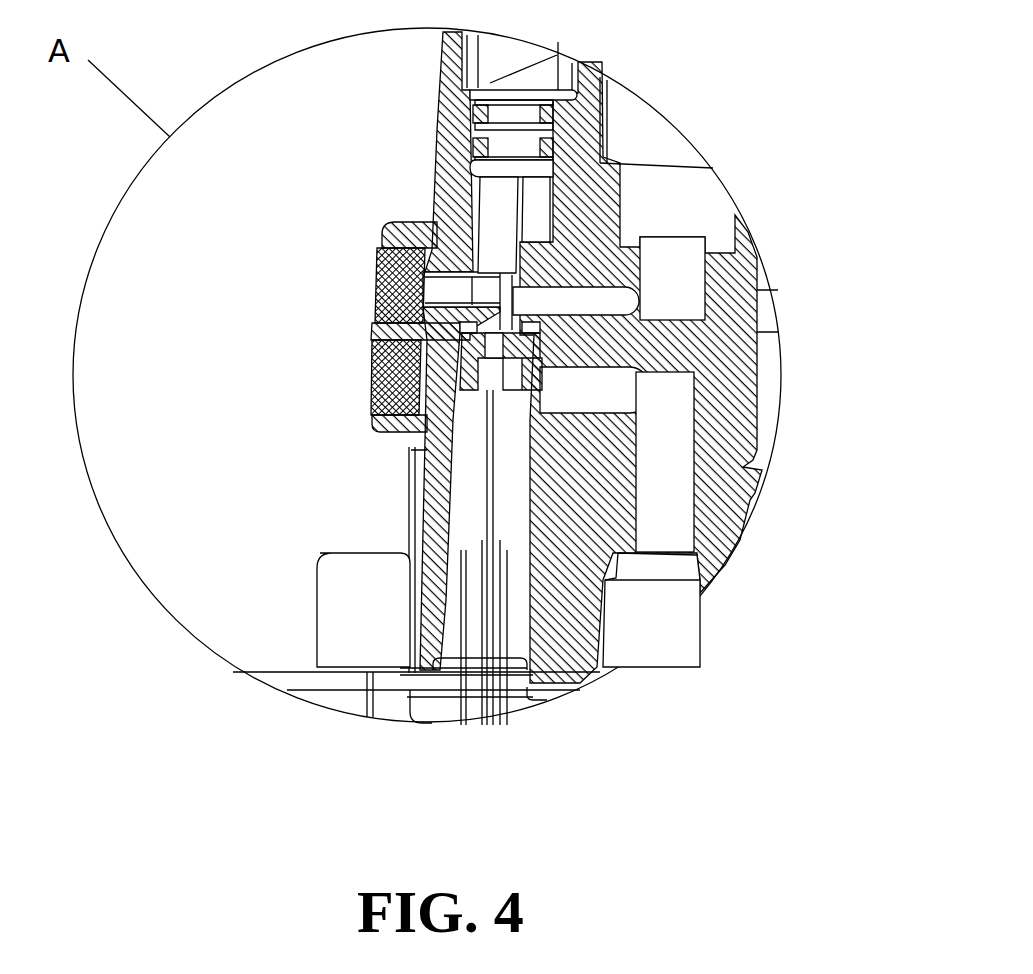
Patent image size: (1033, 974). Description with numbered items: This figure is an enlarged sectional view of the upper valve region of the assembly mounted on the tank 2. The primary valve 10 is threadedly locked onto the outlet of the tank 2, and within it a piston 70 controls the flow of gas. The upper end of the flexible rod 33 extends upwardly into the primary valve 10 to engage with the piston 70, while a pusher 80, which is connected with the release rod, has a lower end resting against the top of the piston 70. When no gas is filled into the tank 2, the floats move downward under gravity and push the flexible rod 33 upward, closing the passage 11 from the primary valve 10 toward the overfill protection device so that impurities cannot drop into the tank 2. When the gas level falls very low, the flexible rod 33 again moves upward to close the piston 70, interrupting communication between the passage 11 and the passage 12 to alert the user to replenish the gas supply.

The tank 2 is at (293, 675).
The primary valve 10 is at (443, 483).
The passage 11 is at (632, 620).
The passage 12 is at (662, 263).
The flexible rod 33 is at (490, 507).
The piston 70 is at (470, 372).
The pusher 80 is at (500, 210).